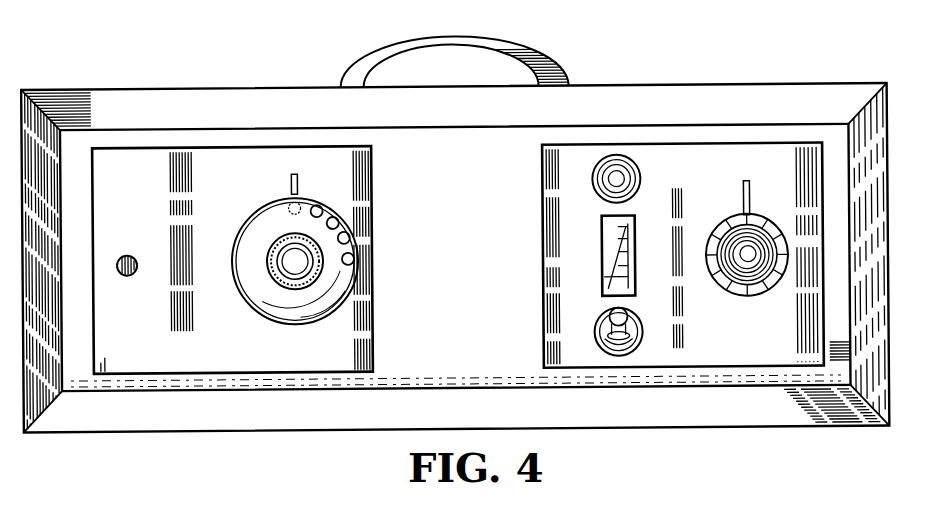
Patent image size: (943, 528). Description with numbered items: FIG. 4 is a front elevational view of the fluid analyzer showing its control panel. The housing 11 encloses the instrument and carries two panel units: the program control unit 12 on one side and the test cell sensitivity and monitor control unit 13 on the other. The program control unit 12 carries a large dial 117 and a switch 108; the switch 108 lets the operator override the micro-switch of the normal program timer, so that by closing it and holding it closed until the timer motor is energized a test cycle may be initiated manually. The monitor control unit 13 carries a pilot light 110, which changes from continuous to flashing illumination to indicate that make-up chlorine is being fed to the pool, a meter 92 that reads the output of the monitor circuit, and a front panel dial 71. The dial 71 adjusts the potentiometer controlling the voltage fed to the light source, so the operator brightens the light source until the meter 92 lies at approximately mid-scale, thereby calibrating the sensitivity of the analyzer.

The housing 11 is at (736, 62).
The program control unit 12 is at (250, 349).
The test cell sensitivity and monitor control unit 13 is at (732, 343).
The switch 108 is at (119, 253).
The selector dial 117 is at (262, 210).
The pilot light 110 is at (642, 182).
The meter 92 is at (636, 262).
The front panel dial 71 is at (766, 226).